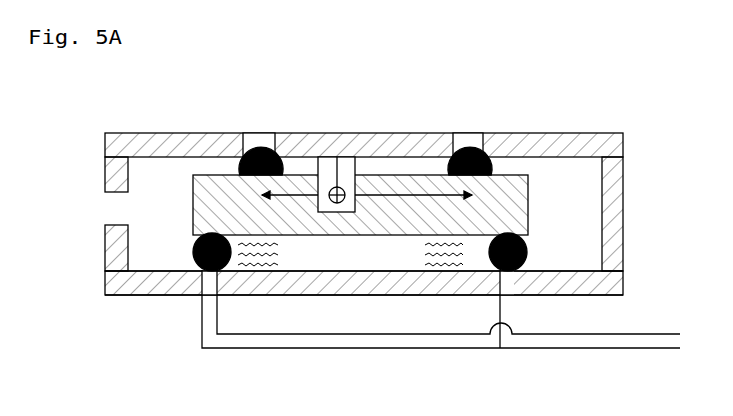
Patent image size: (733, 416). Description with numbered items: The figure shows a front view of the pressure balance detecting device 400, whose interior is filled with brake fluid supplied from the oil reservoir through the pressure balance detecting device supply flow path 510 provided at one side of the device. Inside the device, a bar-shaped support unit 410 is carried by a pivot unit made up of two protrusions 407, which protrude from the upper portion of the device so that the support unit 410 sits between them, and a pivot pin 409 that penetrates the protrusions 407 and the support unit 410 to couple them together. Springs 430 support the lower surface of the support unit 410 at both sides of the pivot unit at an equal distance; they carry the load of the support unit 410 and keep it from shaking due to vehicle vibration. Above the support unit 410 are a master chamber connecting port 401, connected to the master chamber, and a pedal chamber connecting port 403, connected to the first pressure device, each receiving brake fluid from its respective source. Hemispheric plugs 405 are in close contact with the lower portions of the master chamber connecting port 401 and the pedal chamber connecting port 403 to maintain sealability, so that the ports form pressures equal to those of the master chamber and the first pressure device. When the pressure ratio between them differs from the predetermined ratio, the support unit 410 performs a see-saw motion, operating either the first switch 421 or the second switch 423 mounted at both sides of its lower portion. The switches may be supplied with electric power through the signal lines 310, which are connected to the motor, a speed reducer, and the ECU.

The signal lines 310 is at (610, 347).
The pressure balance detecting device 400 is at (613, 157).
The master chamber connecting port 401 is at (257, 142).
The pedal chamber connecting port 403 is at (470, 148).
The hemispheric plugs 405 is at (262, 150).
The protrusions 407 is at (345, 168).
The pivot pin 409 is at (340, 150).
The support unit 410 is at (517, 195).
The first switch 421 is at (200, 267).
The second switch 423 is at (527, 250).
The springs 430 is at (425, 246).
The pressure balance detecting device supply flow path 510 is at (118, 210).